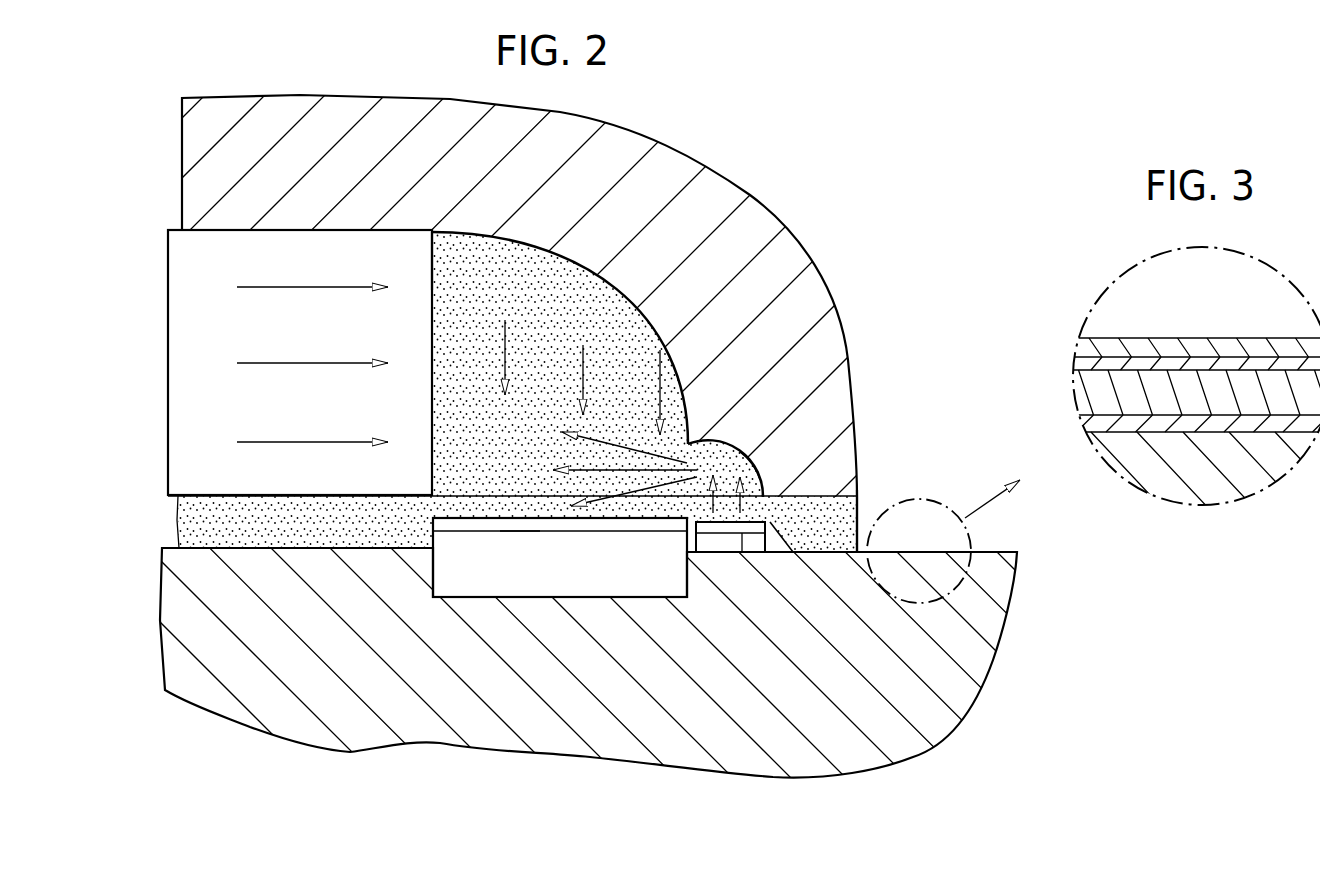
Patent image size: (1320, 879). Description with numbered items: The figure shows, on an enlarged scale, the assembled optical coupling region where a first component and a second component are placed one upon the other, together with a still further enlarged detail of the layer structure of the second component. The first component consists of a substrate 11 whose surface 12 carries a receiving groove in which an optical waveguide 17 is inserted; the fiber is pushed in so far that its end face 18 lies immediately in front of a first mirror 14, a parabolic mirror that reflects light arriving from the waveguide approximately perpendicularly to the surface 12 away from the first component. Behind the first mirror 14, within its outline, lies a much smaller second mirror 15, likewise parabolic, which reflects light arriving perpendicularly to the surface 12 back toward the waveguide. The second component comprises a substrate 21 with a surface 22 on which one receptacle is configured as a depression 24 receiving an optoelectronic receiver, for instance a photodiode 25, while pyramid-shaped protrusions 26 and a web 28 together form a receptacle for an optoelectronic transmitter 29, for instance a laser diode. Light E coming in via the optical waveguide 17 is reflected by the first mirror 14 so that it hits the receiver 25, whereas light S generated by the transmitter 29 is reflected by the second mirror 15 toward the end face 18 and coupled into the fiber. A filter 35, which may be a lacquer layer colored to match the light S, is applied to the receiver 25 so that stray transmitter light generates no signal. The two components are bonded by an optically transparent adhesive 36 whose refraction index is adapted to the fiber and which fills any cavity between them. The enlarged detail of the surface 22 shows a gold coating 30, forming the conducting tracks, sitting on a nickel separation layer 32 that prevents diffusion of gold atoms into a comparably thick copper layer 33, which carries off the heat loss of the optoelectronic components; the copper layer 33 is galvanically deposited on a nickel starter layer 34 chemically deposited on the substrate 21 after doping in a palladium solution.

In FIG. 2, the substrate 11 is at (377, 117).
In FIG. 2, the surface 12 is at (853, 497).
In FIG. 2, the first mirror 14 is at (566, 262).
In FIG. 2, the second mirror 15 is at (718, 450).
In FIG. 2, the optical waveguide 17 is at (185, 404).
In FIG. 2, the end face 18 is at (440, 268).
In FIG. 2, the substrate 21 is at (676, 737).
In FIG. 3, the substrate 21 is at (1237, 470).
In FIG. 2, the surface 22 is at (1006, 552).
In FIG. 2, the depression 24 is at (483, 592).
In FIG. 2, the photodiode 25 is at (519, 570).
In FIG. 2, the pyramid-shaped protrusions 26 is at (791, 520).
In FIG. 2, the web 28 is at (692, 540).
In FIG. 2, the optoelectronic transmitter 29 is at (742, 552).
In FIG. 3, the gold coating 30 is at (1082, 340).
In FIG. 3, the nickel separation layer 32 is at (1080, 366).
In FIG. 3, the copper layer 33 is at (1088, 402).
In FIG. 3, the nickel starter layer 34 is at (1092, 428).
In FIG. 2, the filter 35 is at (596, 527).
In FIG. 2, the adhesive 36 is at (190, 519).
In FIG. 2, the light E is at (273, 363).
In FIG. 2, the light S is at (750, 488).